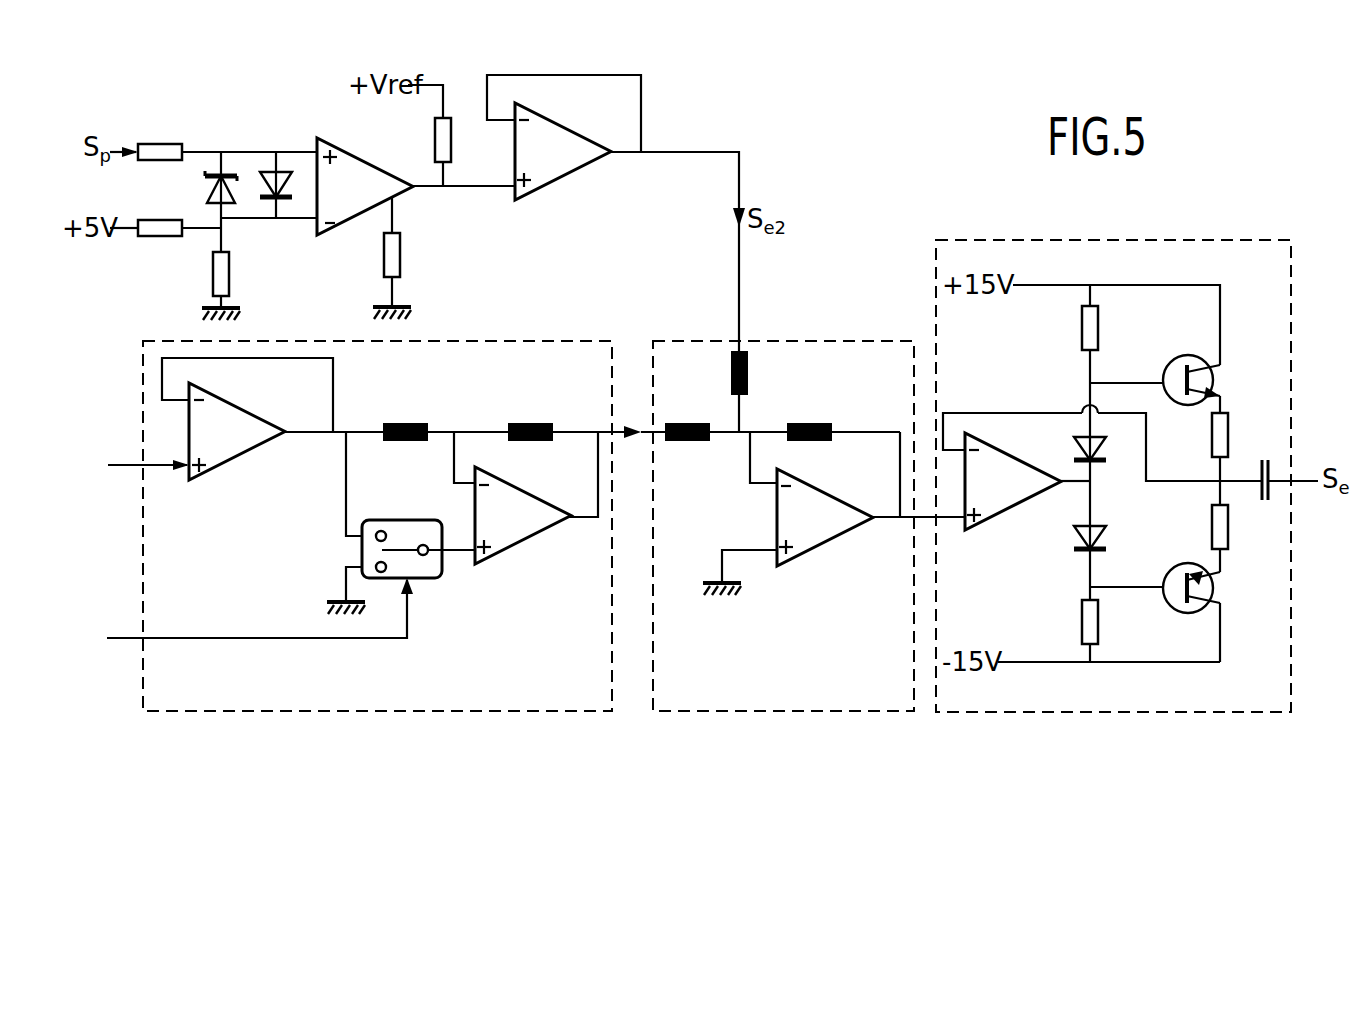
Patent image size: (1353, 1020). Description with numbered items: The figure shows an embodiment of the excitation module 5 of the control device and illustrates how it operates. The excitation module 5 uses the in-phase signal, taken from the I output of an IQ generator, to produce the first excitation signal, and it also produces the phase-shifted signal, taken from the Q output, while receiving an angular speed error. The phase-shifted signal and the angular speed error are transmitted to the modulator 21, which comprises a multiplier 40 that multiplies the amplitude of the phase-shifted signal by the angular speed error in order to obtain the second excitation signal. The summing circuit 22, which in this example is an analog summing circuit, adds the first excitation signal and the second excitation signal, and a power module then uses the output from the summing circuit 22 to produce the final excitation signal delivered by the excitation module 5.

The excitation module 5 is at (397, 728).
The modulator 21 is at (531, 339).
The summing circuit 22 is at (812, 339).
The multiplier 40 is at (427, 583).